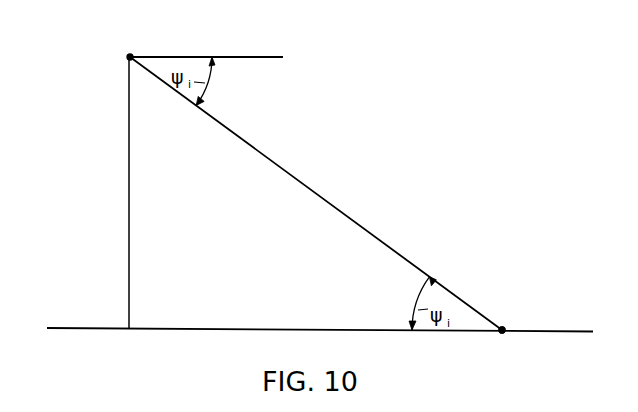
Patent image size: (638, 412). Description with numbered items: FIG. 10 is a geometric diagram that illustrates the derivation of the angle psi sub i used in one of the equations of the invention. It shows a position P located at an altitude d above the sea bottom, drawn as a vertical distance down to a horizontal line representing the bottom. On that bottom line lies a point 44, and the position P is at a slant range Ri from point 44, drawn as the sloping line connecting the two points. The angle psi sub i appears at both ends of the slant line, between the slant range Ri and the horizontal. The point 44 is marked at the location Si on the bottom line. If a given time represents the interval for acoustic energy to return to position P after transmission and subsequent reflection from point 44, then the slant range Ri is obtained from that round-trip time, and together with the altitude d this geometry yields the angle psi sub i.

The point 44 is at (503, 328).
The position P is at (128, 56).
The altitude d is at (118, 193).
The slant range Ri is at (316, 193).
The sensor point S_i Si is at (511, 347).